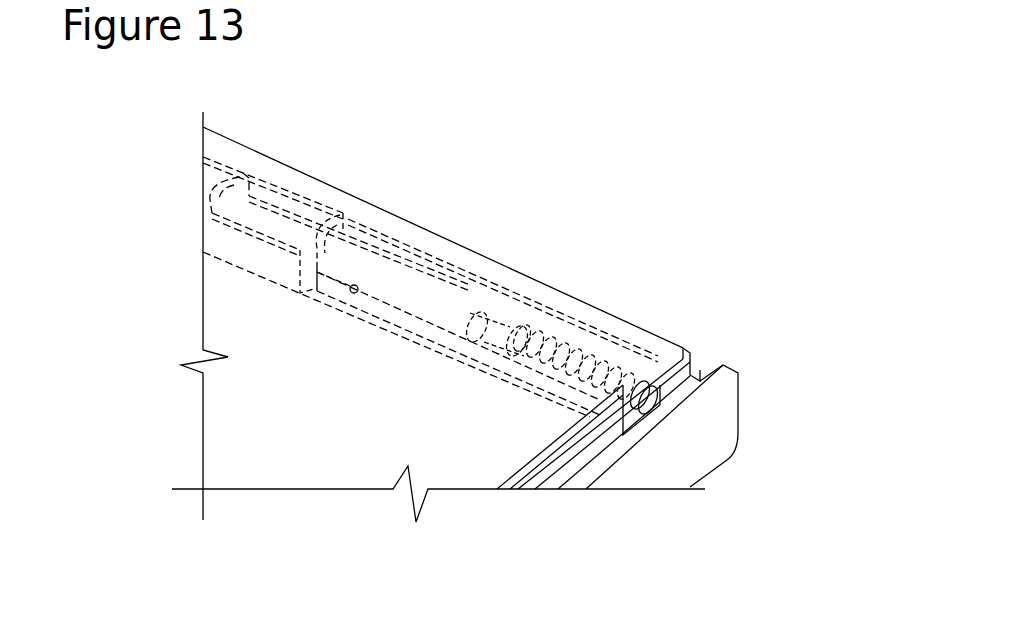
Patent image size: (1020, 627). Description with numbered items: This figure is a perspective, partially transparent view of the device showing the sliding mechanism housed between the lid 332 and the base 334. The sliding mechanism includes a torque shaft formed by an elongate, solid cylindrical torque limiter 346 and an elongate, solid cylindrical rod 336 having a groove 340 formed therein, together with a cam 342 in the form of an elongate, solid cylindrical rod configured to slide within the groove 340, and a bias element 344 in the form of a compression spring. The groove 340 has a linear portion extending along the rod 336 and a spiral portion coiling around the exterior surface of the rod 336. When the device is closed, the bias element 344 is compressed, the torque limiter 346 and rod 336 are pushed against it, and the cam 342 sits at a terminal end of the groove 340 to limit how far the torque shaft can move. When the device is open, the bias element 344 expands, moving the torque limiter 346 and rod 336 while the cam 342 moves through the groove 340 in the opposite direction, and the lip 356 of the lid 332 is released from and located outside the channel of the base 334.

The lid 332 is at (342, 450).
The base 334 is at (718, 416).
The rod 336 is at (423, 280).
The groove 340 is at (336, 268).
The cam 342 is at (357, 286).
The bias element 344 is at (577, 345).
The torque limiter 346 is at (503, 320).
The lip 356 is at (683, 365).